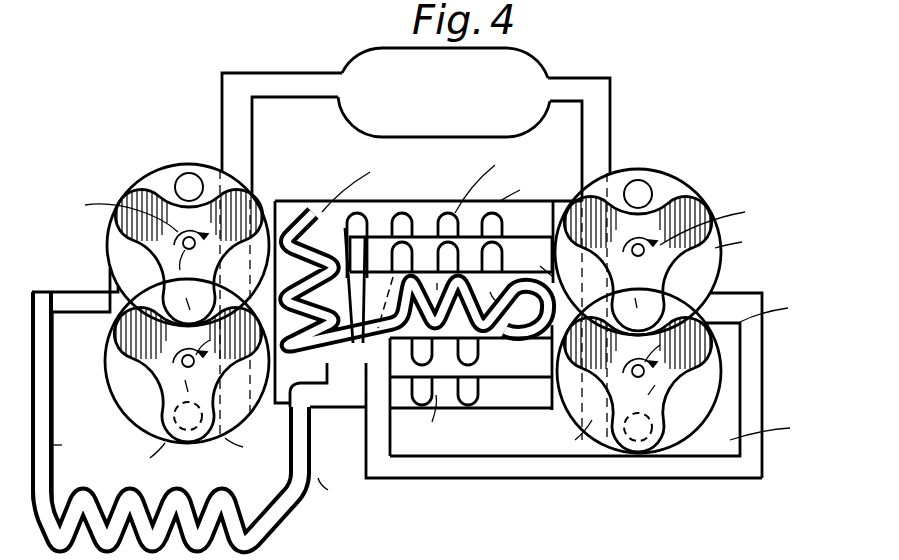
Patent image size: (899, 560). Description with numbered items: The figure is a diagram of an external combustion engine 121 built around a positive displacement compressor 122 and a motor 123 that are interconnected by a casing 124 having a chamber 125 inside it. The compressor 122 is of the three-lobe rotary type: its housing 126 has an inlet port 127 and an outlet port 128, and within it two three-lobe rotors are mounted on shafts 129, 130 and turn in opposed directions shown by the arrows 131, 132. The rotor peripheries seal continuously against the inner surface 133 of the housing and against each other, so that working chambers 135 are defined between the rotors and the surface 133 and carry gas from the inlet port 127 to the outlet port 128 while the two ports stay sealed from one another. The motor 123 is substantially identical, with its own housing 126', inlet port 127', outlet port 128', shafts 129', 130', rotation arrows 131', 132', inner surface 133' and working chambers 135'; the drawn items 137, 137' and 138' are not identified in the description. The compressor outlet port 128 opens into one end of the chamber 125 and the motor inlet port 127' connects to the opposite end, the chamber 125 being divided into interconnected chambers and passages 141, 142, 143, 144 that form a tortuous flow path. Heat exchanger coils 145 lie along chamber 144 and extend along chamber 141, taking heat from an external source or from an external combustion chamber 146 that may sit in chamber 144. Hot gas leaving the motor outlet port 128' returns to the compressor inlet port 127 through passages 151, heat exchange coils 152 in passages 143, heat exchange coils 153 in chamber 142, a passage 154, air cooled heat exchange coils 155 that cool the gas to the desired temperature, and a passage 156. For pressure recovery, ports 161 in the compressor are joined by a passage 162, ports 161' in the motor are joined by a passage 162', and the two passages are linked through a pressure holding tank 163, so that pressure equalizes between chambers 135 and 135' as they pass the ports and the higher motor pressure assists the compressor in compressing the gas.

The external combustion engine 121 is at (430, 194).
The positive displacement compressor 122 is at (246, 451).
The motor 123 is at (770, 424).
The casing 124 is at (392, 427).
The chamber 125 is at (517, 184).
The housing 126 is at (144, 460).
The housing 126' is at (569, 437).
The inlet port 127 is at (62, 402).
The inlet port 127' is at (530, 261).
The outlet port 128 is at (188, 312).
The outlet port 128' is at (685, 321).
The shaft 129 is at (189, 266).
The shaft 129' is at (743, 236).
The shaft 130 is at (213, 342).
The shaft 130' is at (662, 346).
The arrow 131 is at (115, 208).
The arrow 131' is at (715, 219).
The arrow 132 is at (181, 387).
The arrow 132' is at (668, 387).
The inner surface 133 is at (150, 278).
The inner surface 133' is at (690, 311).
The working chambers 135 is at (157, 289).
The working chambers 135' is at (664, 338).
The rotor lobe 137 is at (189, 297).
The rotor lobe 137' is at (628, 301).
The passage 138' is at (778, 305).
The chamber 141 is at (330, 250).
The chamber 142 is at (450, 225).
The passages 143 is at (451, 305).
The chamber 144 is at (433, 282).
The heat exchanger coils 145 is at (348, 180).
The external combustion chamber 146 is at (484, 288).
The passages 151 is at (765, 374).
The heat exchange coils 152 is at (362, 214).
The heat exchange coils 153 is at (462, 289).
The passage 154 is at (339, 492).
The air cooled heat exchange coils 155 is at (275, 493).
The passage 156 is at (62, 448).
The ports 161 is at (190, 283).
The ports 161' is at (675, 328).
The passage 162 is at (282, 134).
The passage 162' is at (607, 139).
The pressure holding tank 163 is at (444, 92).